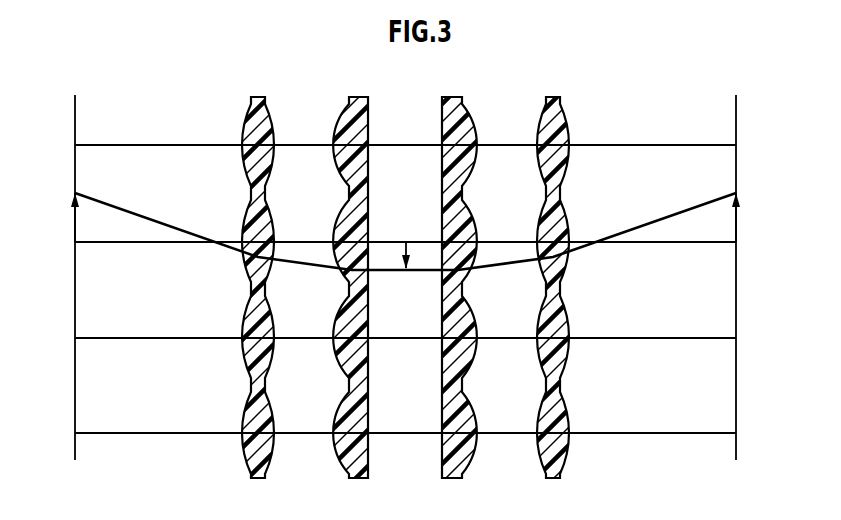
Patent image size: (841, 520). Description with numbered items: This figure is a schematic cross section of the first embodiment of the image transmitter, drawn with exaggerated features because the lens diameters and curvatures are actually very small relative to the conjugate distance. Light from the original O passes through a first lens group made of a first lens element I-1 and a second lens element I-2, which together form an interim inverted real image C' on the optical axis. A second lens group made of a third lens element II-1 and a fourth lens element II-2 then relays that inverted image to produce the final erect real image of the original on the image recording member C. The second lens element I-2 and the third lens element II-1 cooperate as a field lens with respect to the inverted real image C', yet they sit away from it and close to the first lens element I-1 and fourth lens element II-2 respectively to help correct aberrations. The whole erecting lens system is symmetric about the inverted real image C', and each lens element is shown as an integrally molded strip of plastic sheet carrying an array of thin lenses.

The first lens element I-1 is at (420, 260).
The second lens element I-2 is at (420, 260).
The third lens element II-1 is at (420, 260).
The fourth lens element II-2 is at (420, 260).
The original O is at (59, 217).
The image recording member C is at (750, 217).
The inverted real image C' is at (403, 235).